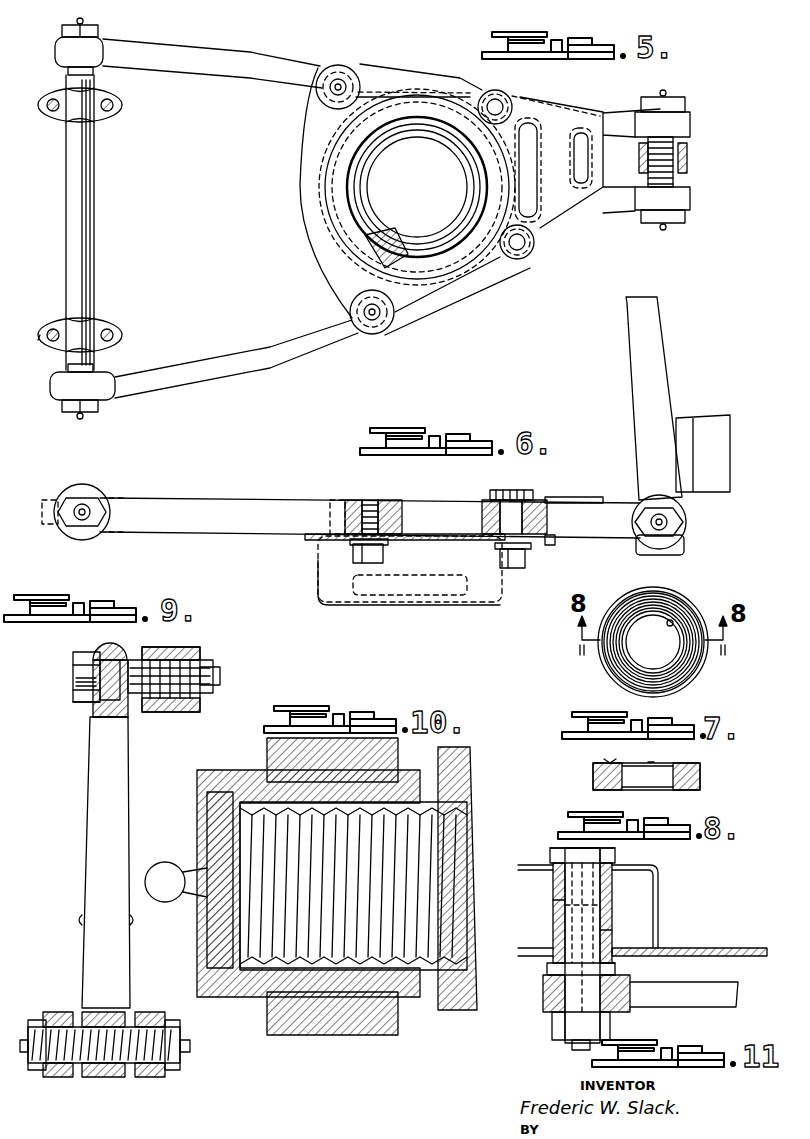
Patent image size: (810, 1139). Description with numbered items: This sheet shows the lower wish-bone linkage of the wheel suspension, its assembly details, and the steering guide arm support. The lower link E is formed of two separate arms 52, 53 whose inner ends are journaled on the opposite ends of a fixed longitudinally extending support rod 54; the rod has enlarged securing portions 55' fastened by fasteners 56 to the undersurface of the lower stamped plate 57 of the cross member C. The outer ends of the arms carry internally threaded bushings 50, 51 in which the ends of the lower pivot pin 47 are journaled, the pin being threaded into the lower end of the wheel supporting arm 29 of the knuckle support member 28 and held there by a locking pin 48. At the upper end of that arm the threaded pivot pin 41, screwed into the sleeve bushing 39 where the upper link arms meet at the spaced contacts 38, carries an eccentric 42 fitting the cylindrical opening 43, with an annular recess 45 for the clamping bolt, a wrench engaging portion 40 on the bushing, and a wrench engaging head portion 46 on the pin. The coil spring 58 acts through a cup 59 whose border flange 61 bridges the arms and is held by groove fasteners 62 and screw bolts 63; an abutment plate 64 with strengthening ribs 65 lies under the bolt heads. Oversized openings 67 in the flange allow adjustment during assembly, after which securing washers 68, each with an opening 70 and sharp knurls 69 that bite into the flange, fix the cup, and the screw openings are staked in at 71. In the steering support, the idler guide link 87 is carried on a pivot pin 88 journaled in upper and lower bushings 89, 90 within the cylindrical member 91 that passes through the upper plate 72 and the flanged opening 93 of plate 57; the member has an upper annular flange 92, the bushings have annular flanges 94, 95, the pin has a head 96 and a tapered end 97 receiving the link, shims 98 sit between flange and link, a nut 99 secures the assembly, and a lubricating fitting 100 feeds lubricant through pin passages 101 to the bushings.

In FIG. 5, the arm 52 is at (255, 60).
In FIG. 9, the arm 52 is at (62, 1080).
In FIG. 10, the arm 52 is at (290, 1035).
In FIG. 5, the arm 53 is at (262, 362).
In FIG. 9, the arm 53 is at (150, 1080).
In FIG. 5, the support rod 54 is at (92, 250).
In FIG. 5, the enlarged securing portions 55' is at (112, 220).
In FIG. 6, the enlarged securing portions 55' is at (43, 483).
In FIG. 5, the fasteners 56 is at (50, 335).
In FIG. 5, the coil spring 58 is at (370, 245).
In FIG. 6, the cup 59 is at (480, 598).
In FIG. 5, the border flange 61 is at (300, 158).
In FIG. 6, the border flange 61 is at (300, 540).
In FIG. 5, the groove fasteners 62 is at (338, 80).
In FIG. 6, the groove fasteners 62 is at (338, 500).
In FIG. 5, the screw bolts 63 is at (500, 102).
In FIG. 6, the screw bolts 63 is at (508, 490).
In FIG. 5, the abutment plate 64 is at (550, 110).
In FIG. 6, the abutment plate 64 is at (572, 497).
In FIG. 5, the strengthening ribs 65 is at (545, 225).
In FIG. 6, the openings 67 is at (548, 540).
In FIG. 6, the securing washer 68 is at (388, 545).
In FIG. 7, the securing washer 68 is at (678, 600).
In FIG. 8, the securing washer 68 is at (702, 780).
In FIG. 7, the knurls 69 is at (645, 605).
In FIG. 8, the knurls 69 is at (604, 762).
In FIG. 7, the opening 70 is at (675, 624).
In FIG. 8, the opening 70 is at (634, 765).
In FIG. 6, the staked portions 71 is at (378, 500).
In FIG. 5, the wheel supporting arm 29 is at (688, 160).
In FIG. 6, the wheel supporting arm 29 is at (658, 358).
In FIG. 9, the wheel supporting arm 29 is at (118, 815).
In FIG. 10, the wheel supporting arm 29 is at (445, 1010).
In FIG. 6, the knuckle support member 28 is at (731, 455).
In FIG. 9, the knuckle support member 28 is at (78, 920).
In FIG. 5, the lower pivot pin 47 is at (688, 172).
In FIG. 9, the lower pivot pin 47 is at (135, 1030).
In FIG. 10, the lower pivot pin 47 is at (462, 840).
In FIG. 5, the lower link E is at (236, 360).
In FIG. 6, the lower link E is at (230, 495).
In FIG. 9, the spaced contacts 38 is at (185, 650).
In FIG. 9, the sleeve bushing 39 is at (170, 715).
In FIG. 9, the wrench engaging portion 40 is at (205, 660).
In FIG. 9, the threaded pivot pin 41 is at (98, 648).
In FIG. 9, the eccentric 42 is at (80, 704).
In FIG. 9, the cylindrical opening 43 is at (98, 720).
In FIG. 9, the annular recess 45 is at (73, 665).
In FIG. 9, the wrench engaging head portion 46 is at (74, 688).
In FIG. 9, the locking pin 48 is at (85, 1078).
In FIG. 9, the bushing 50 is at (172, 1075).
In FIG. 9, the bushing 51 is at (38, 1080).
In FIG. 10, the bushing 51 is at (230, 997).
In FIG. 11, the upper plate 72 is at (648, 866).
In FIG. 11, the idler guide link 87 is at (690, 1010).
In FIG. 11, the pivot pin 88 is at (553, 886).
In FIG. 11, the upper bushing 89 is at (612, 886).
In FIG. 11, the lower bushing 90 is at (612, 932).
In FIG. 11, the cylindrical member 91 is at (553, 905).
In FIG. 11, the upper annular flange 92 is at (612, 857).
In FIG. 11, the flanged opening 93 is at (553, 940).
In FIG. 11, the annular flange 94 is at (548, 855).
In FIG. 11, the annular flange 95 is at (547, 968).
In FIG. 11, the head 96 is at (555, 848).
In FIG. 11, the tapered end 97 is at (548, 993).
In FIG. 11, the shims 98 is at (615, 969).
In FIG. 11, the nut 99 is at (552, 1030).
In FIG. 11, the lubricating fitting 100 is at (575, 1050).
In FIG. 11, the pin passages 101 is at (612, 908).
In FIG. 11, the lower stamped plate 57 is at (640, 948).
In FIG. 11, the cross member C is at (735, 948).